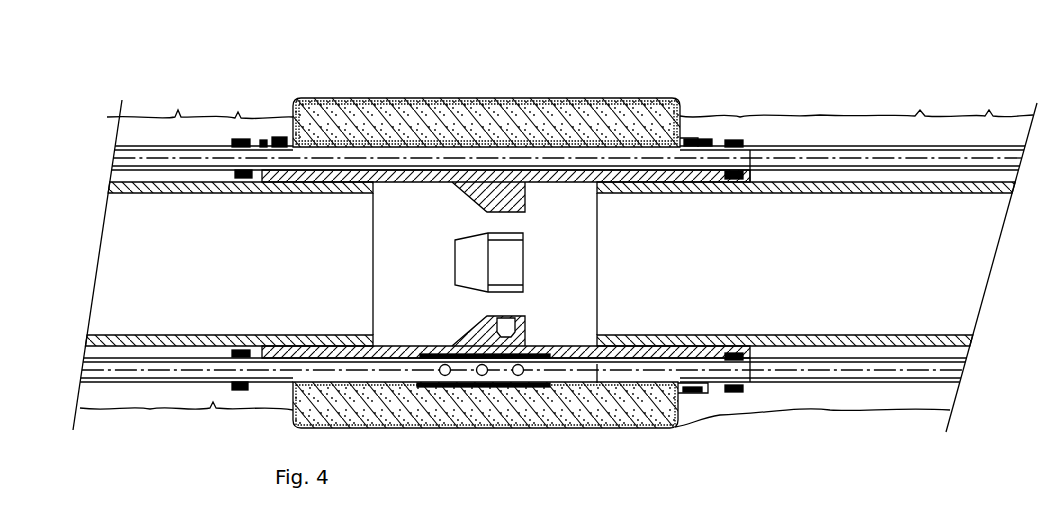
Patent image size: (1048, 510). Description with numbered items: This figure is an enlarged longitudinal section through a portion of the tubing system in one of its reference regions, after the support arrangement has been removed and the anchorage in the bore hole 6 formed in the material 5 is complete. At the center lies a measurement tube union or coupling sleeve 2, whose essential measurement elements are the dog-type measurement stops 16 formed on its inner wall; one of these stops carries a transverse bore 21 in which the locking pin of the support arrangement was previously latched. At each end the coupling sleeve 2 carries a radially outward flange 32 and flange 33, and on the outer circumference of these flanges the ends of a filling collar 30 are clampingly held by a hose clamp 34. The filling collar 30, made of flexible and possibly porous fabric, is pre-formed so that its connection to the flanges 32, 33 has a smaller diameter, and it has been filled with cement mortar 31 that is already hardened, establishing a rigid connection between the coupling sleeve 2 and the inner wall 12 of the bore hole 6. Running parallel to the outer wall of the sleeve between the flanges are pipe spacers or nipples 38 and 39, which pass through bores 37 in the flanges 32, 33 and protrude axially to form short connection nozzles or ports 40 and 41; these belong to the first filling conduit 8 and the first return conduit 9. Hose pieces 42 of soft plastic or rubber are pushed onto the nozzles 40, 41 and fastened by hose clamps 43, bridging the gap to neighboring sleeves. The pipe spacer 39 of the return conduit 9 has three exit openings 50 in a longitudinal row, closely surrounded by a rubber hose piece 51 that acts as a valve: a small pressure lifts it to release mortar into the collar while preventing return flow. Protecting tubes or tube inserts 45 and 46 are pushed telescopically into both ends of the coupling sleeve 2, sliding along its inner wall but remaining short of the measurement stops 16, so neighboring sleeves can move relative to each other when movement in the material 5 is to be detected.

The measurement tube union or coupling sleeve 2 is at (406, 170).
The material to be investigated 5 is at (754, 471).
The bore hole 6 is at (878, 132).
The first filling conduit 8 is at (814, 147).
The first return conduit 9 is at (168, 380).
The inner wall of the bore hole 12 is at (950, 114).
The dog-type measurement stop 16 is at (477, 200).
The transverse bore 21 is at (512, 323).
The filling collar 30 is at (333, 98).
The cement mortar 31 is at (547, 112).
The flange 32 is at (264, 140).
The flange 33 is at (706, 140).
The hose clamp 34 is at (696, 140).
The bore in the flange 37 is at (280, 140).
The pipe spacer or nipple 38 is at (586, 158).
The pipe spacer or nipple 39 is at (608, 383).
The connection nozzle or port 40 is at (235, 158).
The connection nozzle or port 41 is at (752, 186).
The hose piece 42 is at (148, 146).
The hose clamp 43 is at (236, 139).
The protecting tube or tube insert 45 is at (115, 335).
The protecting tube or tube insert 46 is at (852, 347).
The exit opening 50 is at (503, 383).
The hose piece 51 is at (435, 385).